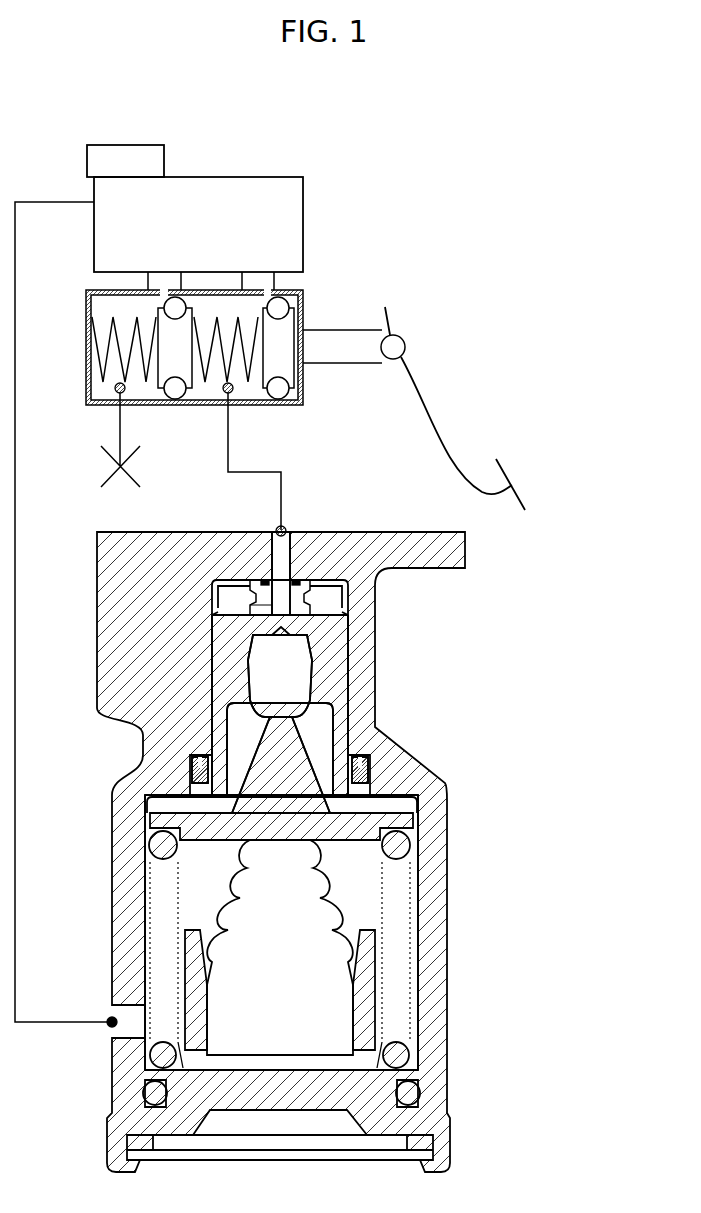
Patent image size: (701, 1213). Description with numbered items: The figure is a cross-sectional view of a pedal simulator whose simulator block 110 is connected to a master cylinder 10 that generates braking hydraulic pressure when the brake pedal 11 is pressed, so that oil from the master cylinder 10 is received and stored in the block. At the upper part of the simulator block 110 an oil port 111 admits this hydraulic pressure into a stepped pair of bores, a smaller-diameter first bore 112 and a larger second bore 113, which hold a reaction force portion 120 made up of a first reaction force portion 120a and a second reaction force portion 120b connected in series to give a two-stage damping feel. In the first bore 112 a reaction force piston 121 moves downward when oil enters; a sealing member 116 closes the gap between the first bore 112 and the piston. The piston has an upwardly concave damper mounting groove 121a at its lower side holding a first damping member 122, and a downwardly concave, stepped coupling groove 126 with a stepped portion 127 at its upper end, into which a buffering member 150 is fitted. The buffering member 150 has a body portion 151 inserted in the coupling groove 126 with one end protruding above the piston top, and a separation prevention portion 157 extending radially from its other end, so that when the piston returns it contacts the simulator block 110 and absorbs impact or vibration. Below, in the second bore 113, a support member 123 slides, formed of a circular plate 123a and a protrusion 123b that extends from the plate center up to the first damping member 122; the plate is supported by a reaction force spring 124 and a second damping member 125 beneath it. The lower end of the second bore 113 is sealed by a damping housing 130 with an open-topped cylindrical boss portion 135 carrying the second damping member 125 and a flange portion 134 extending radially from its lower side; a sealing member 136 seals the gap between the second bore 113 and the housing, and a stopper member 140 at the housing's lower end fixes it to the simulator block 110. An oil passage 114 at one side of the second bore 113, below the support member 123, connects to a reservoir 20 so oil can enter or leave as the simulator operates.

The master cylinder 10 is at (303, 302).
The brake pedal 11 is at (426, 416).
The reservoir 20 is at (303, 214).
The simulator block 110 is at (122, 795).
The oil port 111 is at (277, 550).
The first bore 112 is at (220, 653).
The second bore 113 is at (160, 905).
The oil passage 114 is at (110, 1026).
The sealing member 116 is at (187, 768).
The reaction force portion 120 is at (399, 810).
The first reaction force portion 120a is at (417, 724).
The second reaction force portion 120b is at (377, 876).
The reaction force piston 121 is at (390, 715).
The damper mounting groove 121a is at (305, 660).
The first damping member 122 is at (290, 690).
The support member 123 is at (351, 804).
The circular plate 123a is at (355, 822).
The protrusion 123b is at (300, 768).
The reaction force spring 124 is at (405, 838).
The second damping member 125 is at (310, 905).
The coupling groove 126 is at (343, 592).
The stepped portion 127 is at (298, 582).
The damping housing 130 is at (314, 1027).
The flange portion 134 is at (400, 1122).
The boss portion 135 is at (363, 1003).
The sealing member 136 is at (145, 1090).
The stopper member 140 is at (433, 1143).
The buffering member 150 is at (238, 566).
The body portion 151 is at (255, 590).
The separation prevention portion 157 is at (252, 605).